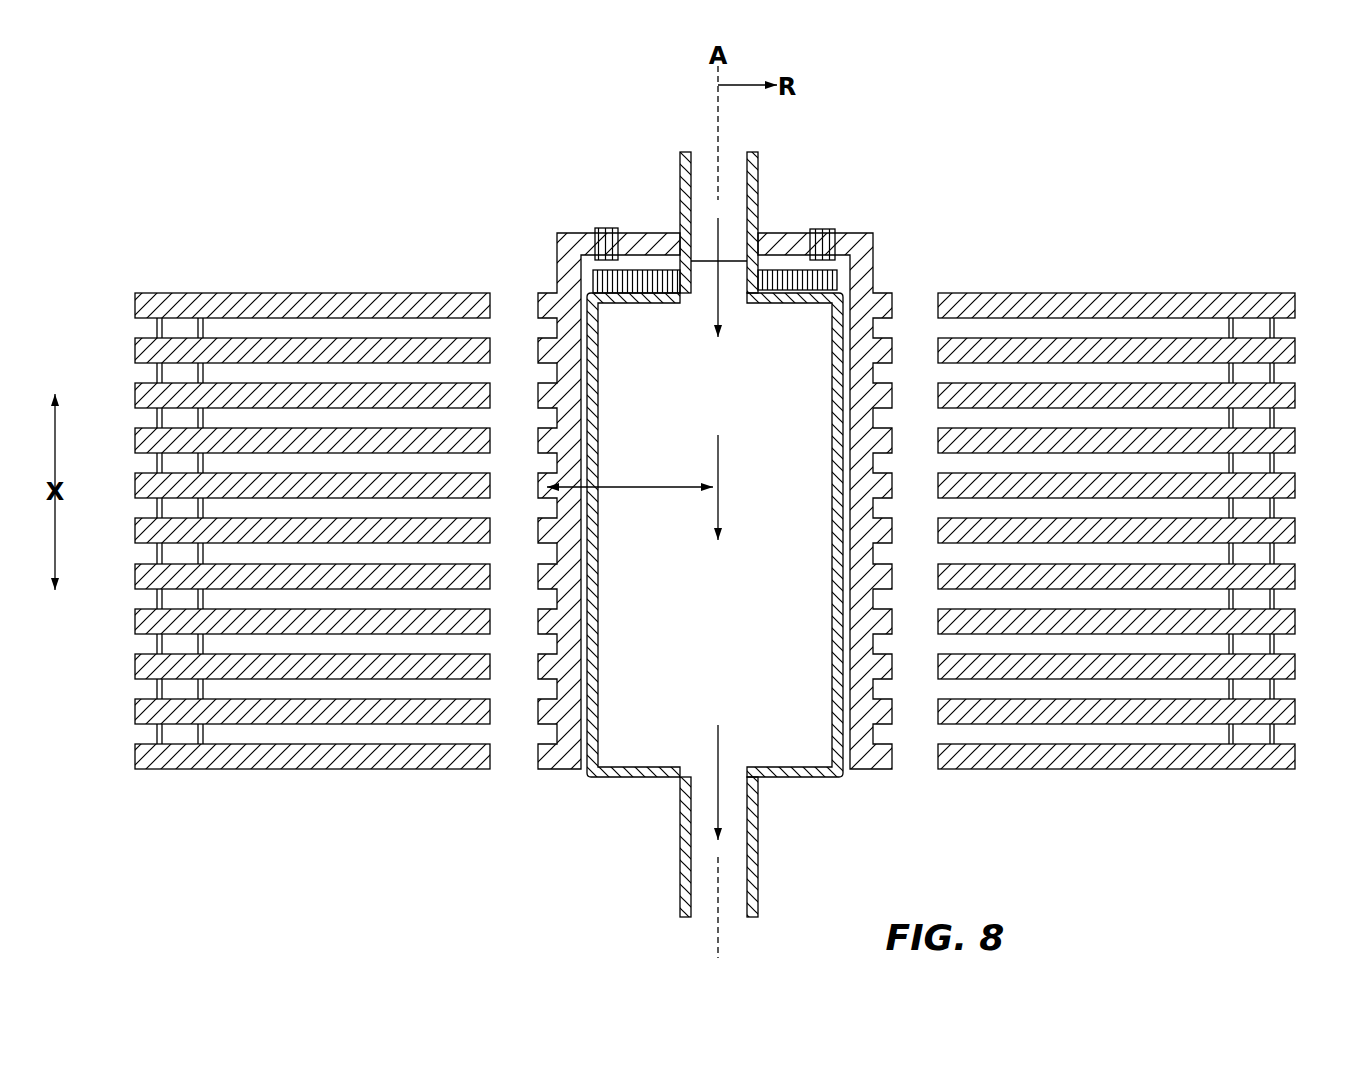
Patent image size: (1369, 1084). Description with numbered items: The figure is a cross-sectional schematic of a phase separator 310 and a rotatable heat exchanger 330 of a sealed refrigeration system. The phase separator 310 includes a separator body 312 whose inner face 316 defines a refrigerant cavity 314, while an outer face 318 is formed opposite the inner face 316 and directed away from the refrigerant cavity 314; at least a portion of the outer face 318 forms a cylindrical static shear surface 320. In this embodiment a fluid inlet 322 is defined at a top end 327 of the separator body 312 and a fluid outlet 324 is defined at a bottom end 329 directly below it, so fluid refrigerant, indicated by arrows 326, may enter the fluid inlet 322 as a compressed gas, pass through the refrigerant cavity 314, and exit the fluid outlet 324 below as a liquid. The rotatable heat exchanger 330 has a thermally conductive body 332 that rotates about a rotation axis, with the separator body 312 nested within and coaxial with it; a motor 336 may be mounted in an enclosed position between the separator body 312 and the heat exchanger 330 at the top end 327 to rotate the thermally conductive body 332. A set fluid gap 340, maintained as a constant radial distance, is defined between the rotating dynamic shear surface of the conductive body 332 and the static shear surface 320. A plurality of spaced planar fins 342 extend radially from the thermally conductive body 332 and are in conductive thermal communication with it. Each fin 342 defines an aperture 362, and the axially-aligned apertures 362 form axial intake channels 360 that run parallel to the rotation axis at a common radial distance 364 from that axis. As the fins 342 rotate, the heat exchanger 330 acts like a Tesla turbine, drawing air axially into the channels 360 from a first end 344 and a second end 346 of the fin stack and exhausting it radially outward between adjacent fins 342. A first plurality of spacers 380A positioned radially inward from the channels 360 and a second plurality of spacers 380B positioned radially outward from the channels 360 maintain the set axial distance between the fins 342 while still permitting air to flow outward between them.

The phase separator 310 is at (808, 822).
The separator body 312 is at (830, 778).
The refrigerant cavity 314 is at (725, 397).
The inner face 316 is at (831, 505).
The outer face 318 is at (848, 537).
The static shear surface 320 is at (586, 578).
The fluid inlet 322 is at (737, 155).
The fluid outlet 324 is at (735, 905).
The fluid refrigerant flow 326 is at (722, 330).
The top end 327 is at (652, 282).
The bottom end 329 is at (635, 780).
The rotatable heat exchanger 330 is at (1183, 212).
The thermally conductive body 332 is at (798, 236).
The motor 336 is at (840, 281).
The fluid gap 340 is at (581, 772).
The fins 342 is at (128, 284).
The first end 344 is at (245, 290).
The second end 346 is at (201, 775).
The axial intake channel 360 is at (510, 288).
The aperture 362 is at (487, 667).
The radial distance 364 is at (632, 484).
The spacers 380A is at (880, 643).
The spacers 380B is at (1274, 734).